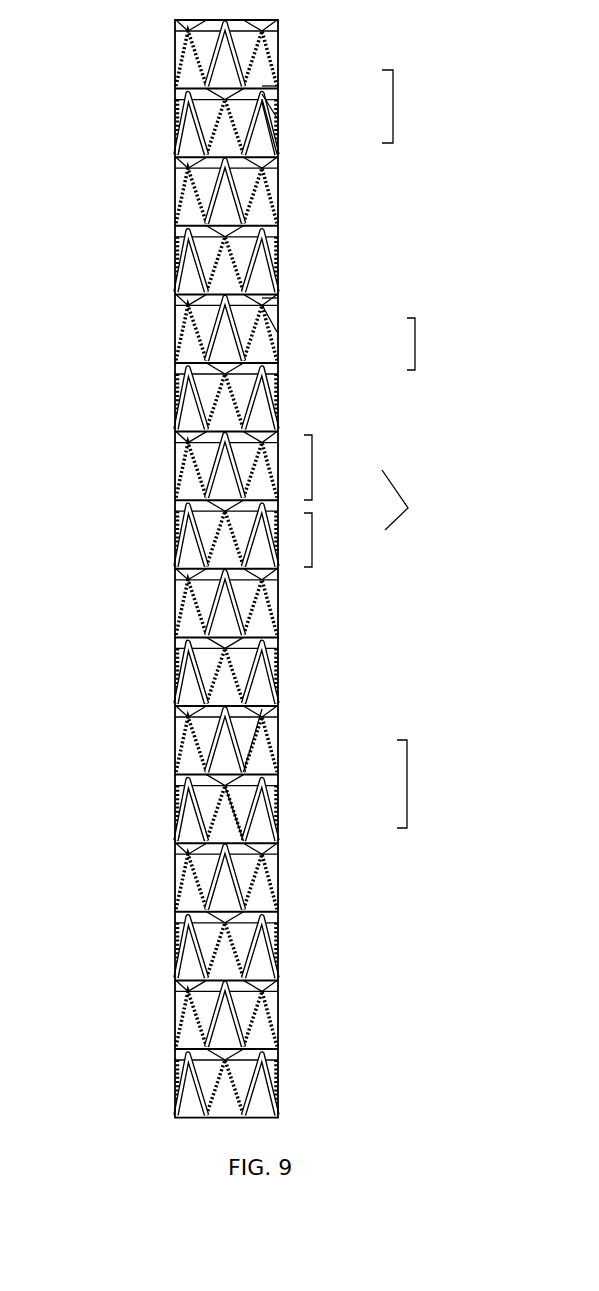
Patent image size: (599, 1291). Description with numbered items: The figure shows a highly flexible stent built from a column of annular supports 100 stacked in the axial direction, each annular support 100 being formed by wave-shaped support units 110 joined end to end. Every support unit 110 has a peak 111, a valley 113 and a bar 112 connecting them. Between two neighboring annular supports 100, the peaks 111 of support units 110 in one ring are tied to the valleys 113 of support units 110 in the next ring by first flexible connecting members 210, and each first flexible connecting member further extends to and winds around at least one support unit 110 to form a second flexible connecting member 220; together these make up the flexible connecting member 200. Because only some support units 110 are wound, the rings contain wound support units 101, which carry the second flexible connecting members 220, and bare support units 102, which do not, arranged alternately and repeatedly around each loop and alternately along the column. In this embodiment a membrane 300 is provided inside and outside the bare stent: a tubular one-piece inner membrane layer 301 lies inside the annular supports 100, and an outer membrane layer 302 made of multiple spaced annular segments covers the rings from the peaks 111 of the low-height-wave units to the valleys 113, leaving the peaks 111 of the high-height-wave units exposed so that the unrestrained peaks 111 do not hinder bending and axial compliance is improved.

The annular support 100 is at (158, 62).
The support unit 110 is at (423, 300).
The peak 111 is at (270, 87).
The bar 112 is at (270, 120).
The valley 113 is at (270, 153).
The wound support unit 101 is at (343, 467).
The bare support unit 102 is at (343, 540).
The flexible connecting member 200 is at (446, 344).
The first flexible connecting member 210 is at (270, 300).
The second flexible connecting member 220 is at (270, 332).
The membrane 300 is at (435, 784).
The inner membrane layer 301 is at (247, 780).
The outer membrane layer 302 is at (248, 732).